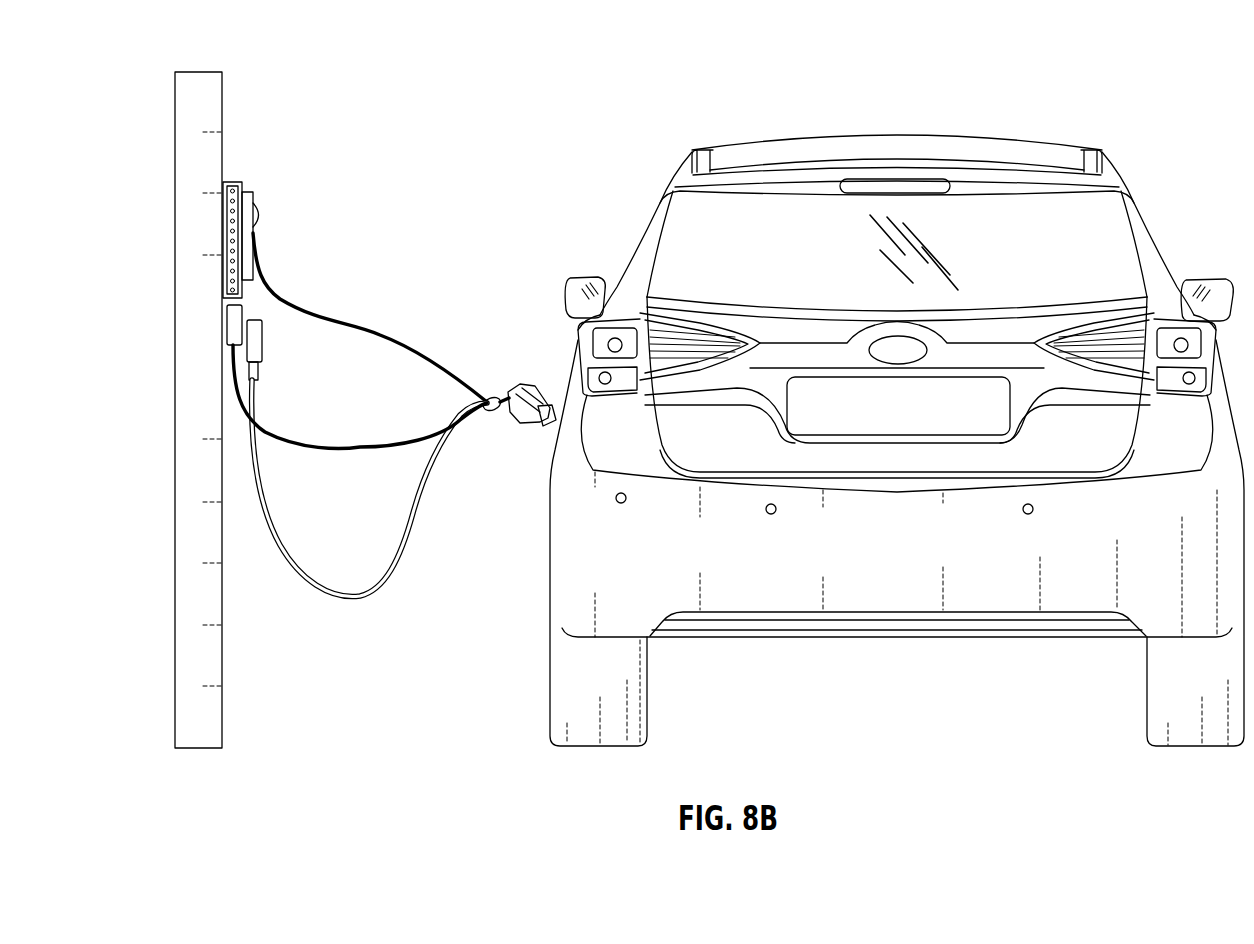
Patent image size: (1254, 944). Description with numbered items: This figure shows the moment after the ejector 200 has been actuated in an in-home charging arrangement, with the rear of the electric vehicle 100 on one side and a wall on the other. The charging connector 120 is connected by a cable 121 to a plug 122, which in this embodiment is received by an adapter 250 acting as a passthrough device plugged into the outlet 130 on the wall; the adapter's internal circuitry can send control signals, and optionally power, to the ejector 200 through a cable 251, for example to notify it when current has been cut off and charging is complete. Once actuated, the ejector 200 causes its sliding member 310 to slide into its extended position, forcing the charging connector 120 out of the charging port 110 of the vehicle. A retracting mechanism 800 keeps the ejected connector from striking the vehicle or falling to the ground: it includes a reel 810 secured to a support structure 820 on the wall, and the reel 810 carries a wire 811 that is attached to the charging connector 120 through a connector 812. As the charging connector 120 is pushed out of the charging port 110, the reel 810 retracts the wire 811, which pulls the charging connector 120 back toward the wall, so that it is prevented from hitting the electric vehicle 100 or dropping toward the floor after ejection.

The electric vehicle 100 is at (1136, 133).
The charging port 110 is at (552, 462).
The charging connector 120 is at (537, 427).
The cable 121 is at (329, 596).
The plug 122 is at (263, 343).
The outlet 130 is at (225, 316).
The ejector 200 is at (530, 390).
The adapter 250 is at (225, 343).
The cable 251 is at (361, 450).
The sliding member 310 is at (596, 303).
The retracting mechanism 800 is at (362, 238).
The reel 810 is at (262, 217).
The wire 811 is at (363, 327).
The connector 812 is at (487, 400).
The support structure 820 is at (247, 172).